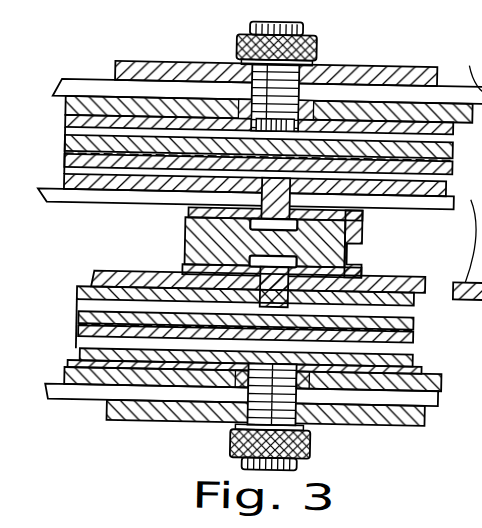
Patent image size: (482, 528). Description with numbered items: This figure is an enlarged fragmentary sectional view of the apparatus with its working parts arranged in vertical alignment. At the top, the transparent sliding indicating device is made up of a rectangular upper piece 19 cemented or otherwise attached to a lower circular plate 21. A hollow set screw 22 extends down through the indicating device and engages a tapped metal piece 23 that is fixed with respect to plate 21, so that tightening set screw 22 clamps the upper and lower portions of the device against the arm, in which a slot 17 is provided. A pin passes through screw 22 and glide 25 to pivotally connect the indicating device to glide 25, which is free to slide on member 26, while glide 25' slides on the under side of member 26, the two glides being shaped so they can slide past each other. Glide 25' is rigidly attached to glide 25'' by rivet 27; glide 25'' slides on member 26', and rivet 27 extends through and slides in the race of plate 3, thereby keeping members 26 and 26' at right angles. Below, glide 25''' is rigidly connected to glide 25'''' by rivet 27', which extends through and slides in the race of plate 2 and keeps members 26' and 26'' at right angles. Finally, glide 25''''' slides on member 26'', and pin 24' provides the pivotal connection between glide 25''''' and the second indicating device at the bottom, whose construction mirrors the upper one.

The plate 2 is at (100, 284).
The plate 3 is at (48, 205).
The slot 17 is at (247, 139).
The rectangular upper piece 19 is at (383, 75).
The lower circular plate 21 is at (63, 109).
The hollow set screw 22 is at (314, 47).
The tapped metal piece 23 is at (257, 108).
The pin 24' is at (289, 417).
The glide 25 is at (243, 118).
The glide 25' is at (235, 174).
The glide 25'' is at (378, 244).
The glide 25''' is at (301, 260).
The glide 25'''' is at (246, 277).
The glide 25''''' is at (219, 352).
The member 26 is at (241, 153).
The member 26' is at (251, 236).
The member 26'' is at (217, 320).
The rivet 27 is at (219, 204).
The rivet 27' is at (327, 283).